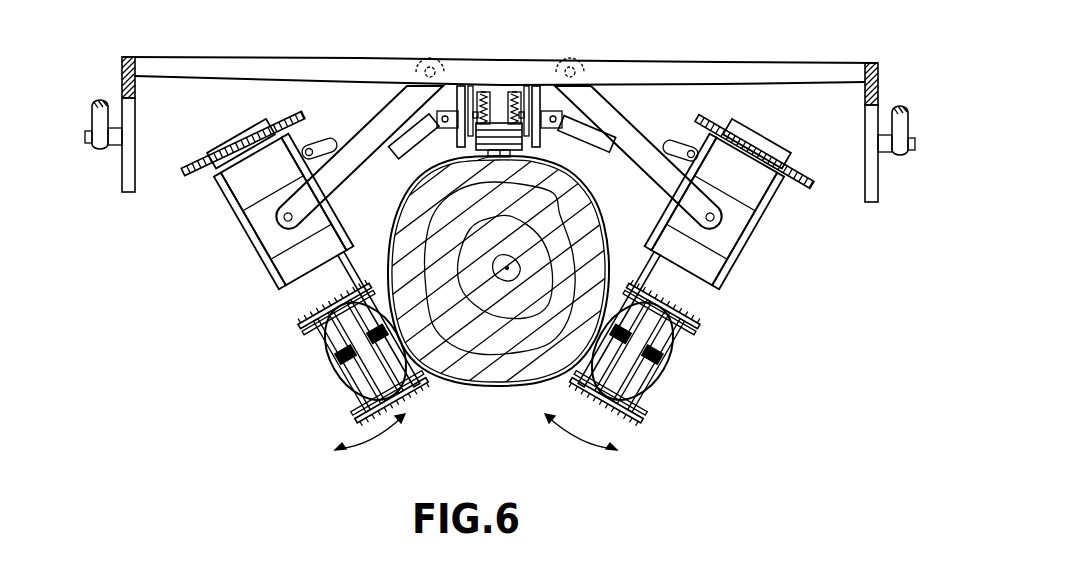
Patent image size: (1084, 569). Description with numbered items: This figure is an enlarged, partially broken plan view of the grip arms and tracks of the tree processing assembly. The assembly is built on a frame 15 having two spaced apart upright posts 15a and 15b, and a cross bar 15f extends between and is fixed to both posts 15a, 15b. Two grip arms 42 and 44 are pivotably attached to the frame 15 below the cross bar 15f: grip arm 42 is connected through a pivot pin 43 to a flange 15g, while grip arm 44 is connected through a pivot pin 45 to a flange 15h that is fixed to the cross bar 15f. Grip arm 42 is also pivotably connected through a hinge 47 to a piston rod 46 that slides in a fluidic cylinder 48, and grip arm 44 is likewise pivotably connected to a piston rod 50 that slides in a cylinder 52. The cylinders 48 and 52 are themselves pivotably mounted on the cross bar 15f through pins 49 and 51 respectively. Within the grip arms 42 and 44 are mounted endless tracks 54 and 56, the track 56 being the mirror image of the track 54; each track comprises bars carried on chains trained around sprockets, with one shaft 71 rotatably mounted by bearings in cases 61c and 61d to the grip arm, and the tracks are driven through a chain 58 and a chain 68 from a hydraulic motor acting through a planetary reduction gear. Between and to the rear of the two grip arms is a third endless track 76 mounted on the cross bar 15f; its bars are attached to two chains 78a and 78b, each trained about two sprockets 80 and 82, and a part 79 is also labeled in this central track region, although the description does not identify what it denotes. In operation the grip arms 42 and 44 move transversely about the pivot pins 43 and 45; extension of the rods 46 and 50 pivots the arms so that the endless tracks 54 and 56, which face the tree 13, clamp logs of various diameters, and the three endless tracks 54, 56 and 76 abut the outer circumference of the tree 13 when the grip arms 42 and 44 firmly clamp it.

The tree 13 is at (483, 376).
The frame 15 is at (499, 115).
The upright post 15a is at (878, 78).
The upright post 15b is at (122, 70).
The cross bar 15f is at (284, 65).
The flange 15g is at (662, 173).
The flange 15h is at (355, 162).
The grip arm 42 is at (738, 281).
The pivot pin 43 is at (706, 218).
The grip arm 44 is at (265, 293).
The pivot pin 45 is at (283, 219).
The piston rod 46 is at (672, 145).
The hinge 47 is at (690, 149).
The fluidic cylinder 48 is at (595, 137).
The pin 49 is at (554, 124).
The piston rod 50 is at (329, 148).
The pin 51 is at (444, 124).
The cylinder 52 is at (410, 133).
The endless track 54 is at (674, 397).
The endless track 56 is at (367, 367).
The chain 58 is at (330, 350).
The case 61c is at (353, 391).
The case 61d is at (313, 318).
The chain 68 is at (192, 177).
The shaft 71 is at (360, 392).
The endless track 76 is at (477, 163).
The chain 78a is at (512, 92).
The chain 78b is at (485, 92).
The collar stem 79 is at (502, 150).
The sprocket 80 is at (517, 88).
The sprocket 82 is at (507, 90).